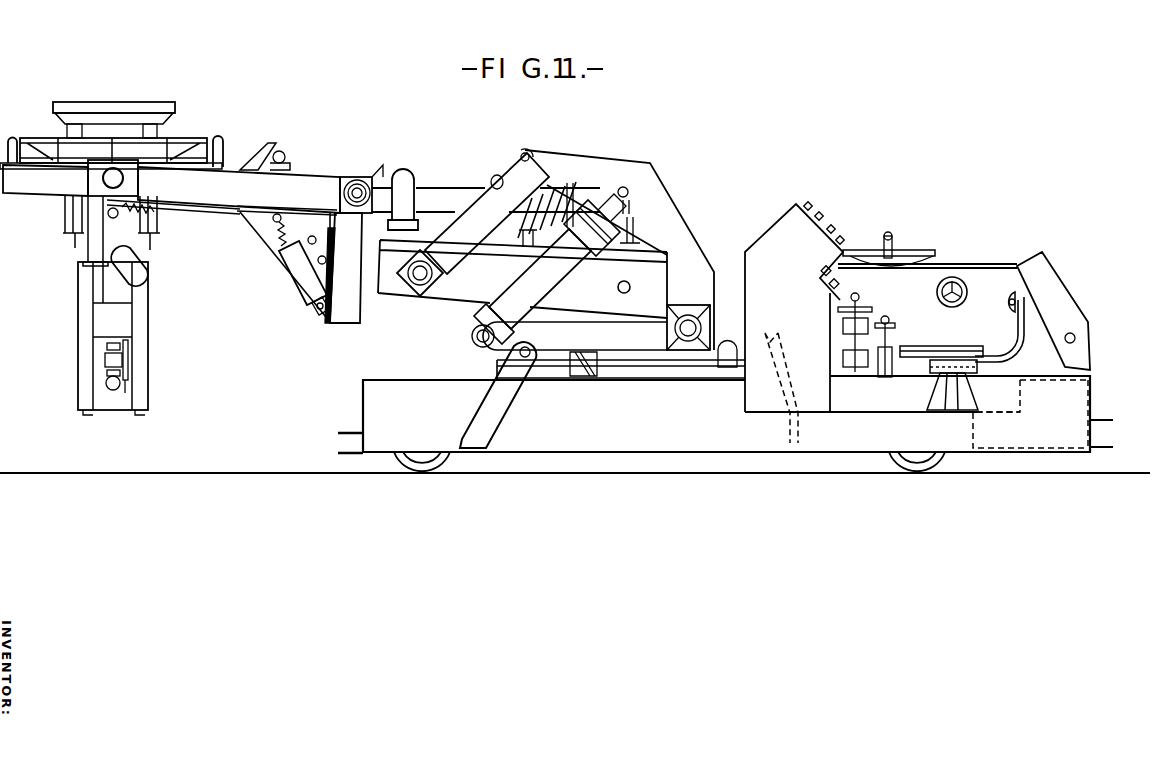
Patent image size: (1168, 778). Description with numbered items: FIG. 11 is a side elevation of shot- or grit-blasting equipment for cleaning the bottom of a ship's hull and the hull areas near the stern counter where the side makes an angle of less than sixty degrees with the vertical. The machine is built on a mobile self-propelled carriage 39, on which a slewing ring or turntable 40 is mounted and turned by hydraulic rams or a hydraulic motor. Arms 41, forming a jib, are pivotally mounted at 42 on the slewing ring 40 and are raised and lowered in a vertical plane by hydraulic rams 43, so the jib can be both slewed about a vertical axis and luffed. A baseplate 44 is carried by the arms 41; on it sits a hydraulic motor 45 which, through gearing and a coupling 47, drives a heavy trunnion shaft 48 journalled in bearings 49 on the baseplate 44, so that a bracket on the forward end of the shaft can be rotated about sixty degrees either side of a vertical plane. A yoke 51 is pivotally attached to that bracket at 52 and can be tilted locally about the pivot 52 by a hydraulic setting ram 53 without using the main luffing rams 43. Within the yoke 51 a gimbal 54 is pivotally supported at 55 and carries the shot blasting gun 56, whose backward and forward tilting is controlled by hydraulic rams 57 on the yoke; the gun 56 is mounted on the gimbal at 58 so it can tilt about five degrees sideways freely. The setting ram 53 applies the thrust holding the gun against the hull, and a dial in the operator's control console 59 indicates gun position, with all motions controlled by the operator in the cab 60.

The carriage 39 is at (675, 438).
The slewing ring 40 is at (655, 370).
The arms 41 is at (655, 287).
The pivot 42 is at (673, 328).
The hydraulic rams 43 is at (548, 272).
The baseplate 44 is at (503, 247).
The hydraulic motor 45 is at (630, 212).
The coupling 47 is at (540, 197).
The trunnion shaft 48 is at (447, 198).
The bearings 49 is at (403, 180).
The yoke 51 is at (233, 187).
The pivot 52 is at (357, 182).
The hydraulic setting ram 53 is at (302, 272).
The gimbal 54 is at (42, 180).
The pivots 55 is at (118, 178).
The shot blasting gun 56 is at (143, 107).
The hydraulic rams 57 is at (185, 207).
The gun mounting 58 is at (25, 143).
The operator's control console 59 is at (815, 215).
The cab 60 is at (980, 252).